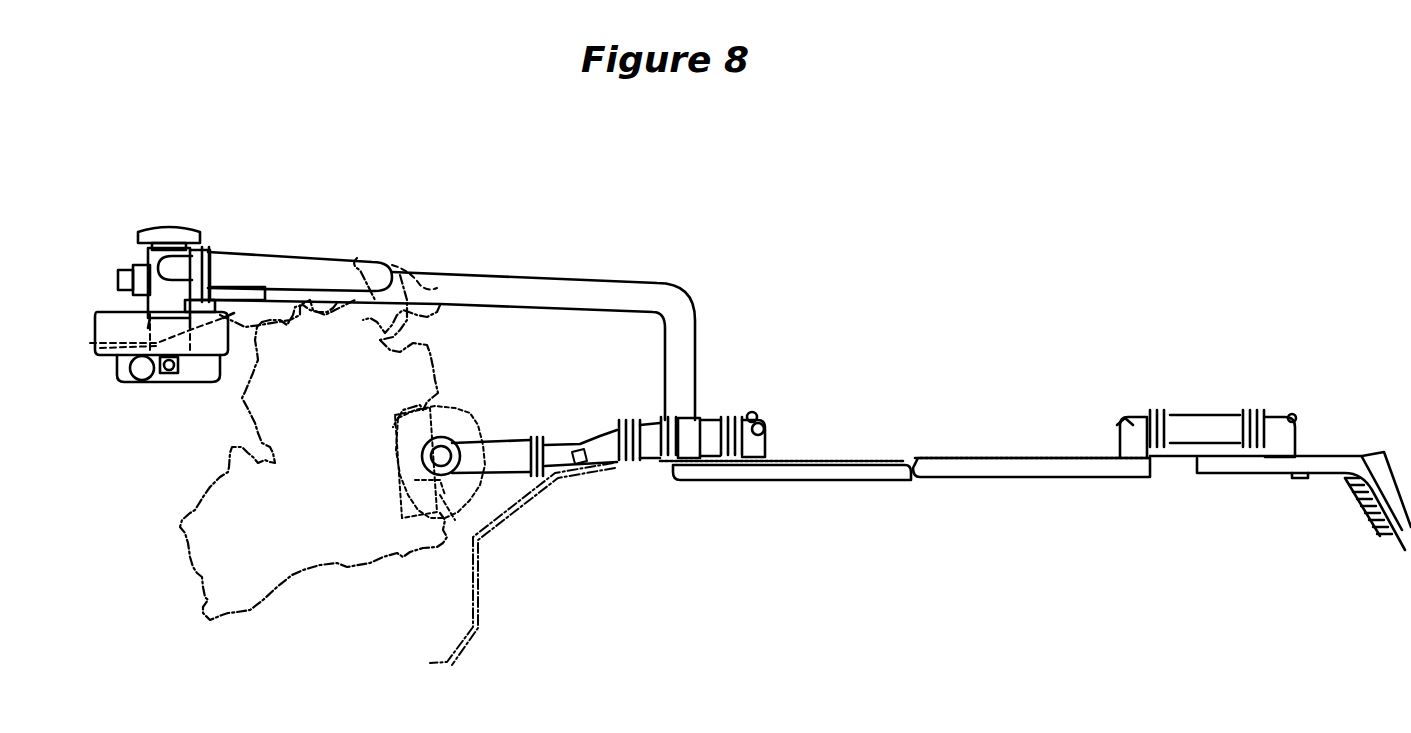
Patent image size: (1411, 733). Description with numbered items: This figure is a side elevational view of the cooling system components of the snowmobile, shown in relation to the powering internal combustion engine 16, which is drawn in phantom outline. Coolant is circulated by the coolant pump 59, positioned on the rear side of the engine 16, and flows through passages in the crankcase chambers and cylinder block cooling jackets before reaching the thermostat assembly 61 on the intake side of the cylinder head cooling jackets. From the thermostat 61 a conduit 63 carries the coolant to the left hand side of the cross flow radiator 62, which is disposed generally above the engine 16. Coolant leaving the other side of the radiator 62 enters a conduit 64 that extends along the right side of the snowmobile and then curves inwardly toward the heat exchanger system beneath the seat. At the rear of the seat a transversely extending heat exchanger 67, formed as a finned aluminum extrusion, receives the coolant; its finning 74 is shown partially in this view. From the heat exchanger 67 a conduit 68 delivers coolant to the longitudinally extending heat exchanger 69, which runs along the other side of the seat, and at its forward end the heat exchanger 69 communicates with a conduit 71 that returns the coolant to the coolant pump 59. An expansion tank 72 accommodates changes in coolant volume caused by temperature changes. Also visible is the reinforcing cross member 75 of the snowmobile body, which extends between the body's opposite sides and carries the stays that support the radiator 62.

The internal combustion engine 16 is at (252, 612).
The coolant pump 59 is at (472, 445).
The thermostat assembly 61 is at (437, 280).
The cross flow radiator 62 is at (152, 281).
The conduit 63 is at (247, 262).
The conduit 64 is at (532, 285).
The transversely extending heat exchanger 67 is at (1247, 465).
The conduit 68 is at (1217, 417).
The longitudinally extending heat exchanger 69 is at (1138, 470).
The conduit 71 is at (508, 452).
The expansion tank 72 is at (92, 340).
The finning 74 is at (1367, 507).
The reinforcing cross member 75 is at (146, 378).